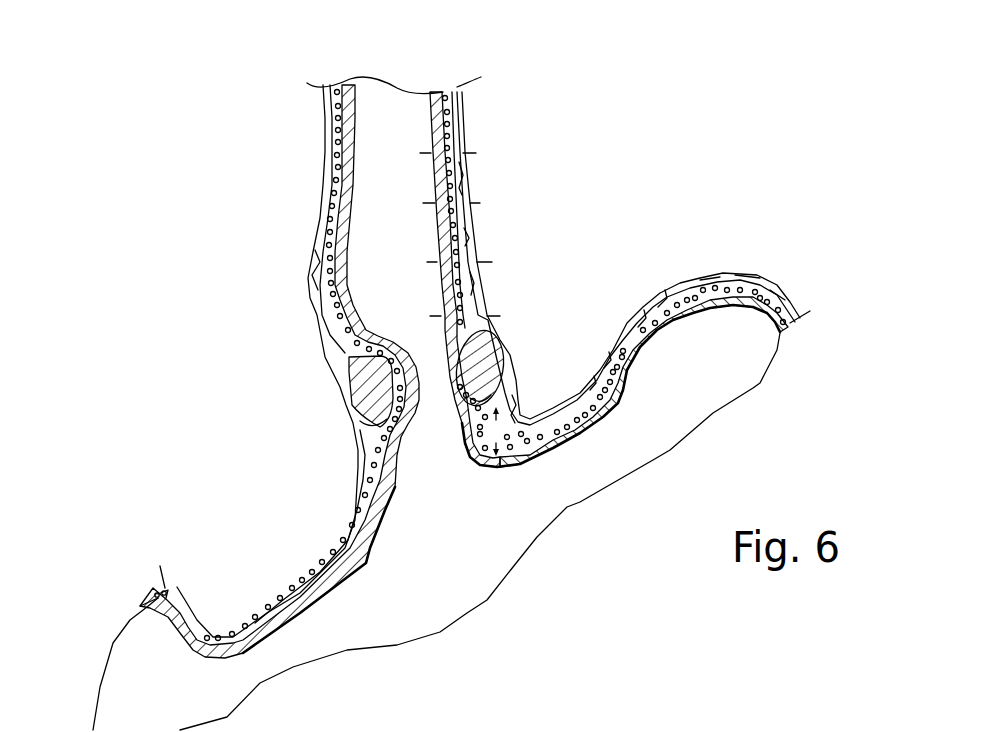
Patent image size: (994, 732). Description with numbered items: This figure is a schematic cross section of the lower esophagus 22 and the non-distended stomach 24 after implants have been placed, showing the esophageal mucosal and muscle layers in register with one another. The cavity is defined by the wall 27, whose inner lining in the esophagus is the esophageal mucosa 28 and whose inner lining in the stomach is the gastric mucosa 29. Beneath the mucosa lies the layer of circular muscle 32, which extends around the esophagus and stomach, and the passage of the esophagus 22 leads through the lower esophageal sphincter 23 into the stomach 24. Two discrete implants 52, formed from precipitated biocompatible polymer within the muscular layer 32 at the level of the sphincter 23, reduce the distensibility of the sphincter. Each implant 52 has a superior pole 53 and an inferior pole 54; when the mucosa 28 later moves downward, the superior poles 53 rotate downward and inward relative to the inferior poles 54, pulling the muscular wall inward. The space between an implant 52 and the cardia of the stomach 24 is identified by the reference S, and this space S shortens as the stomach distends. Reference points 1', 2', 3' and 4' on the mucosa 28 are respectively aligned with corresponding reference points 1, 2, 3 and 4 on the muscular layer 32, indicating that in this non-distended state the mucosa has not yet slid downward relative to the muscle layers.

The esophageal mucosa 28 is at (368, 97).
The esophagus 22 is at (473, 93).
The layer of circular muscle 32 is at (450, 119).
The wall 27 is at (327, 134).
The lower esophageal sphincter 23 is at (345, 470).
The stomach 24 is at (512, 533).
The gastric mucosa 29 is at (175, 647).
The reference point 1 is at (481, 153).
The reference point 1' is at (416, 153).
The reference point 2 is at (484, 203).
The reference point 2' is at (418, 203).
The reference point 3 is at (497, 263).
The reference point 3' is at (420, 263).
The reference point 4 is at (504, 317).
The reference point 4' is at (425, 317).
The implant 52 is at (512, 350).
The superior pole 53 is at (483, 337).
The inferior pole 54 is at (487, 390).
The space S is at (496, 431).